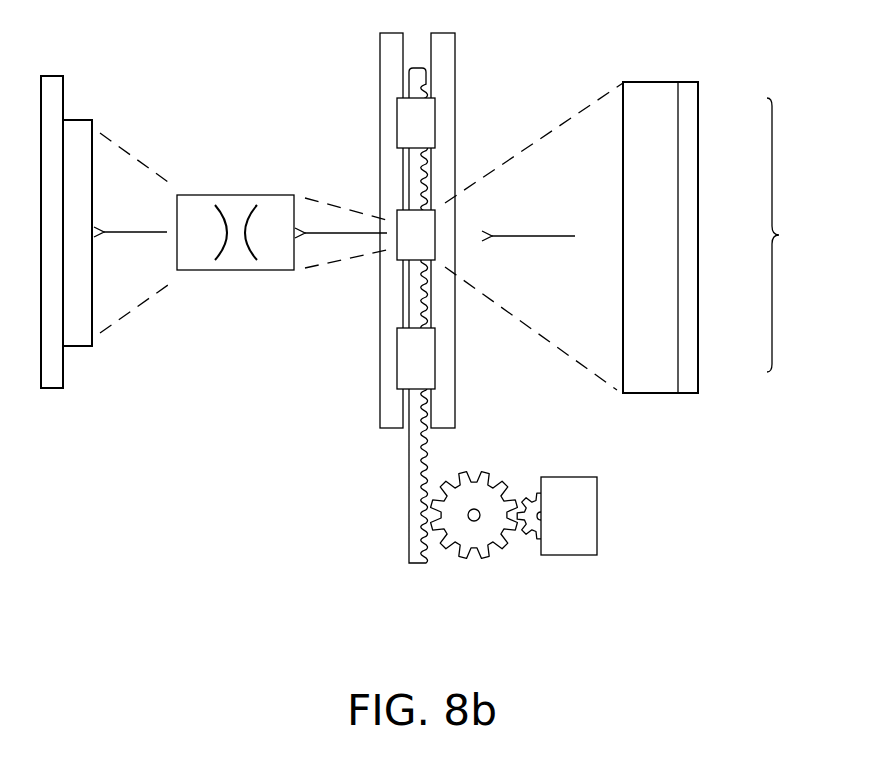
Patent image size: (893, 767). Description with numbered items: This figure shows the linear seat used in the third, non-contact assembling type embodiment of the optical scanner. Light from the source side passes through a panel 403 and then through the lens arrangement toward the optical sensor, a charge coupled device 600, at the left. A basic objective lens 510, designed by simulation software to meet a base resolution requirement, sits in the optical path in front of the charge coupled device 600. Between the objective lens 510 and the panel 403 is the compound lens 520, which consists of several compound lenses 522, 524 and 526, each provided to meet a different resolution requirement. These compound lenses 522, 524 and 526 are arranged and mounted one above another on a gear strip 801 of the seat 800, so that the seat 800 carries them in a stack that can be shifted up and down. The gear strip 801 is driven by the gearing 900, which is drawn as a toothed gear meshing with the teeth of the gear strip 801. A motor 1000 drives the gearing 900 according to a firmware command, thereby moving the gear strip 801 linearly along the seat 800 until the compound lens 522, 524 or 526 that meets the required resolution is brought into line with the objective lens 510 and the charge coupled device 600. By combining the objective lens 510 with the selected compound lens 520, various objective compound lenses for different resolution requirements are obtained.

The charge coupled device 600 is at (49, 86).
The basic objective lens 510 is at (237, 202).
The light source panel 403 is at (657, 88).
The compound lens 522 is at (420, 128).
The compound lens 524 is at (425, 233).
The compound lens 526 is at (425, 363).
The compound lens 520 is at (798, 235).
The seat 800 is at (388, 365).
The gear strip 801 is at (415, 463).
The gearing 900 is at (478, 545).
The motor 1000 is at (588, 520).